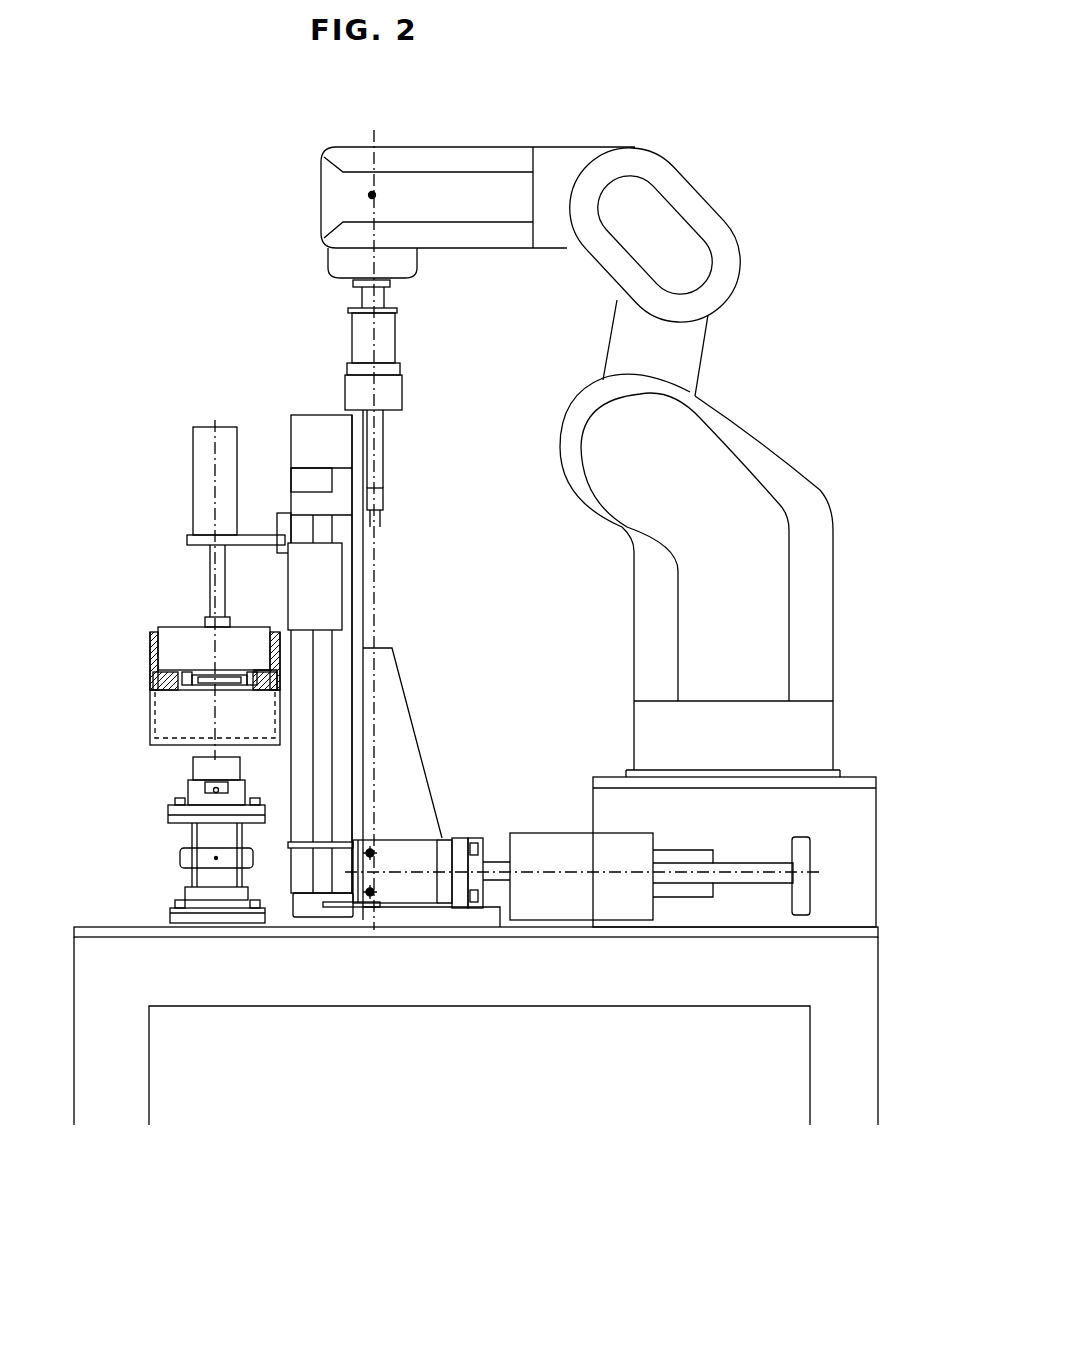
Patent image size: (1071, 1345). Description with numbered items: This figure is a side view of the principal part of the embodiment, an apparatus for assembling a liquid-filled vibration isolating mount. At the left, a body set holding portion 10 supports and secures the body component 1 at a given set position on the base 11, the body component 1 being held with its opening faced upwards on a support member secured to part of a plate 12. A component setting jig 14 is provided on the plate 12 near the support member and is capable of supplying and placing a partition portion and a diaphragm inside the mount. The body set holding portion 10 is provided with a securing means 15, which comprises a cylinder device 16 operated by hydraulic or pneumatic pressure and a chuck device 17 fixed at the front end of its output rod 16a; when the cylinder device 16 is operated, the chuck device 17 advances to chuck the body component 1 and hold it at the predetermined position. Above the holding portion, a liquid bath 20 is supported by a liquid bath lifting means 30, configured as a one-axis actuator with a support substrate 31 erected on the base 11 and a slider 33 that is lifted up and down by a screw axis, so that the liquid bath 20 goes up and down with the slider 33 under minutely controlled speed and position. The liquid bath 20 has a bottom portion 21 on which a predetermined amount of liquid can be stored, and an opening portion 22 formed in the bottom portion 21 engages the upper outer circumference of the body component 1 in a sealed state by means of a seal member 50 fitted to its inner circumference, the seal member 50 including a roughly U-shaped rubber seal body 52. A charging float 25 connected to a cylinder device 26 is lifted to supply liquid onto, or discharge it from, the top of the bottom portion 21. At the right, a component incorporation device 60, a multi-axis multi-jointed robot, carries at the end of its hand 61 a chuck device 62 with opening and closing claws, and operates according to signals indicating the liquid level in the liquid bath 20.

The component incorporation device 60 is at (733, 165).
The hand 61 is at (362, 337).
The chuck device 62 is at (378, 453).
The liquid bath lifting means 30 is at (278, 448).
The support substrate 31 is at (358, 556).
The slider 33 is at (300, 563).
The cylinder device 26 is at (205, 473).
The charging float 25 is at (180, 632).
The bottom portion 21 is at (150, 650).
The liquid bath 20 is at (155, 680).
The seal member 50 is at (210, 668).
The opening portion 22 is at (262, 672).
The seal body 52 is at (200, 683).
The component setting jig 14 is at (170, 805).
The body component 1 is at (180, 855).
The body set holding portion 10 is at (160, 887).
The plate 12 is at (178, 922).
The base 11 is at (107, 986).
The chuck device 17 is at (333, 912).
The securing means 15 is at (472, 828).
The output rod 16a is at (497, 900).
The cylinder device 16 is at (585, 910).